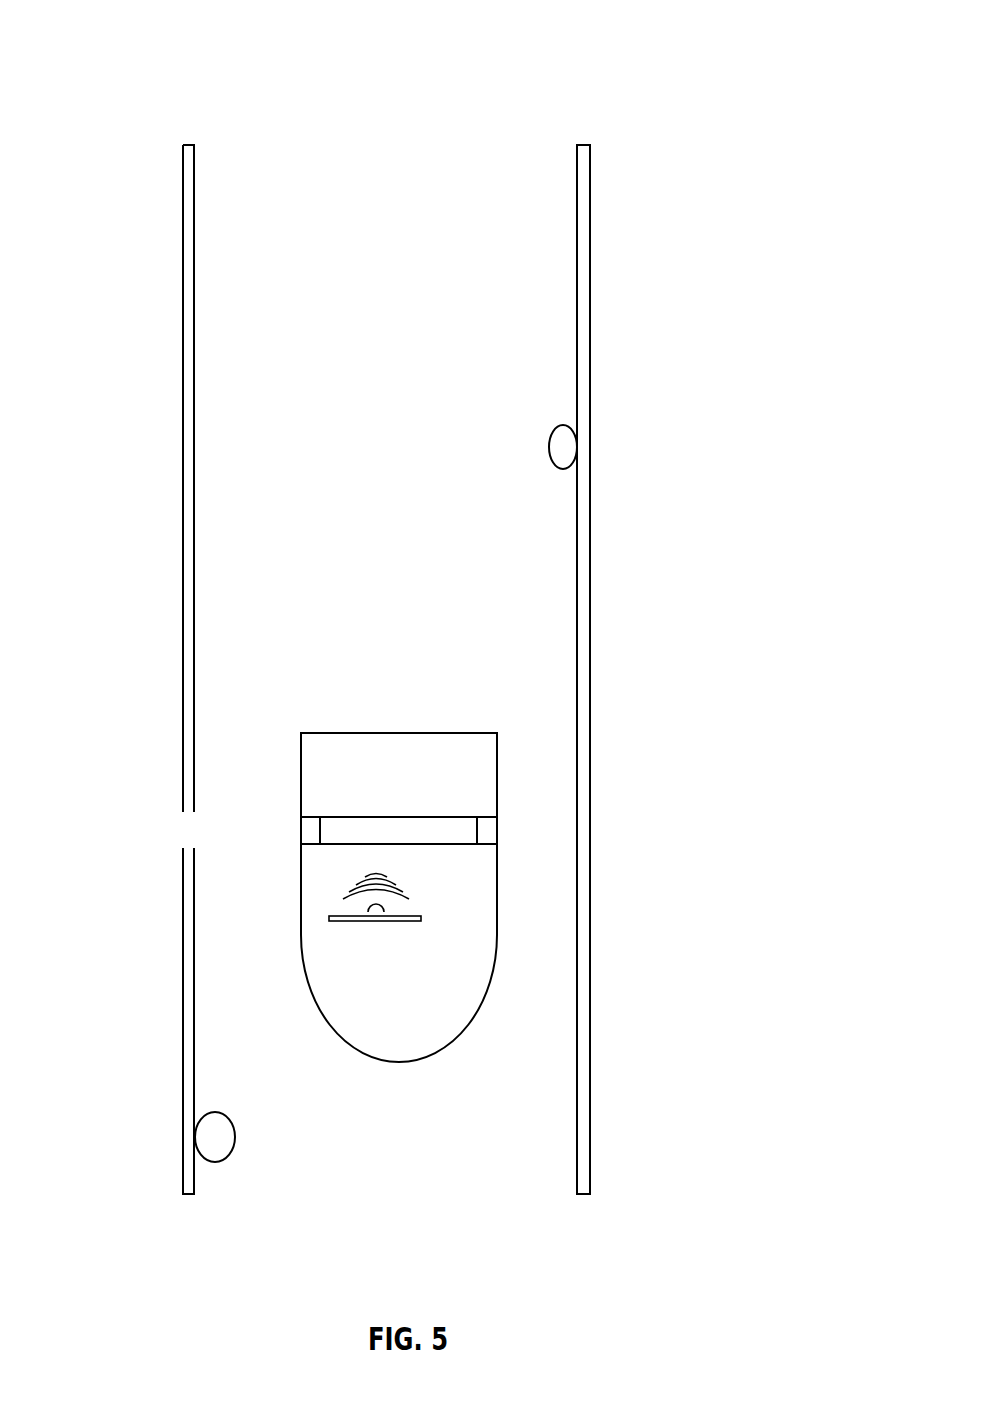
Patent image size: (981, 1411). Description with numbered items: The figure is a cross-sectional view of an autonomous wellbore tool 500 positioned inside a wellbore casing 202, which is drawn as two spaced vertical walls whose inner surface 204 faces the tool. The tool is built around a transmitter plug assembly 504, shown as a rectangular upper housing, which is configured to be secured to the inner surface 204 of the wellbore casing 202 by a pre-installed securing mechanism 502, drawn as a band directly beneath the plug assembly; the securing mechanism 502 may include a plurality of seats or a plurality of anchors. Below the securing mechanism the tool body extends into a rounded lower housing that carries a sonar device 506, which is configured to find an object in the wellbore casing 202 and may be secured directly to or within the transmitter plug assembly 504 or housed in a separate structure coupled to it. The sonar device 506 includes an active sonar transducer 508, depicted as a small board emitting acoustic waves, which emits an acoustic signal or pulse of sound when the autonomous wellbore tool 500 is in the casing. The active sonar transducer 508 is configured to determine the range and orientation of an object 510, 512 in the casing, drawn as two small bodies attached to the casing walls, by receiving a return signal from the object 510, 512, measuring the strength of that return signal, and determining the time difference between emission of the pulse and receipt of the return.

The autonomous wellbore tool 500 is at (583, 76).
The wellbore casing 202 is at (183, 668).
The inner surface 204 is at (577, 368).
The pre-installed securing mechanism 502 is at (301, 830).
The transmitter plug assembly 504 is at (301, 805).
The sonar device 506 is at (357, 899).
The active sonar transducer 508 is at (405, 918).
The object 510 is at (549, 445).
The object 512 is at (195, 1133).